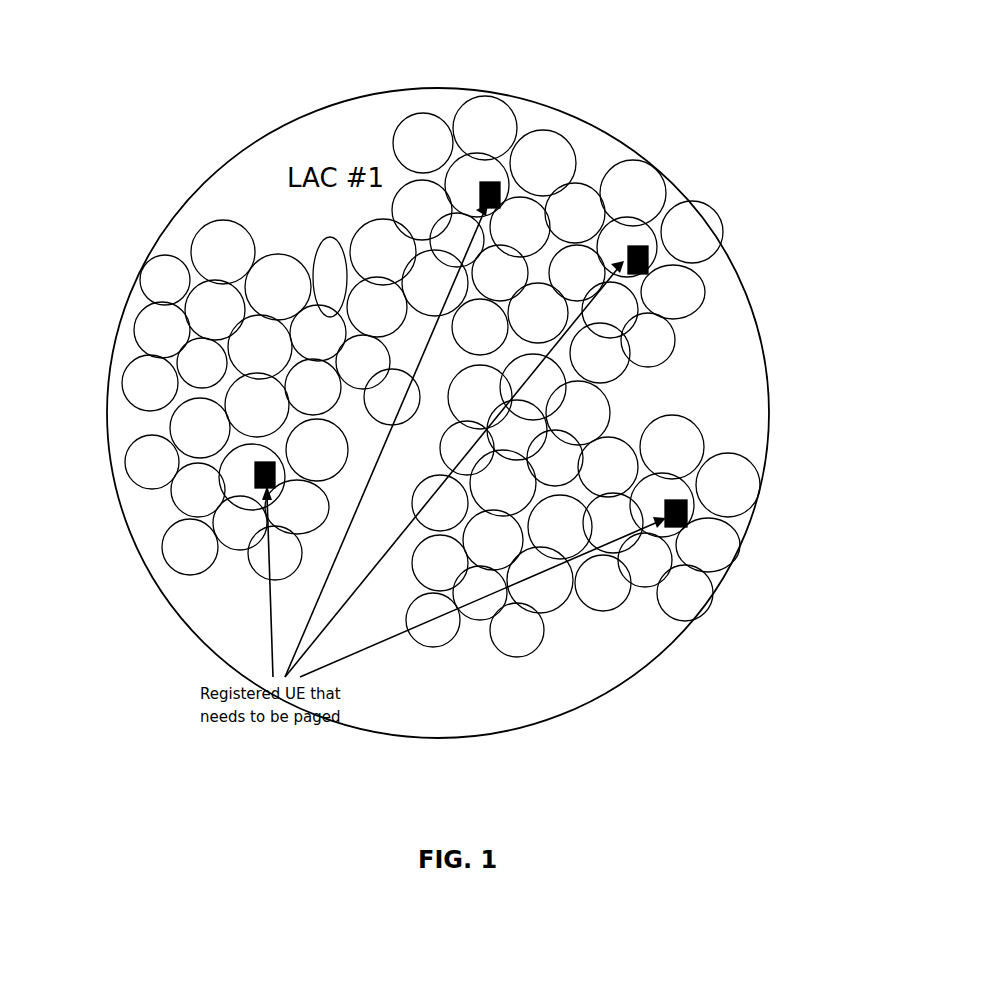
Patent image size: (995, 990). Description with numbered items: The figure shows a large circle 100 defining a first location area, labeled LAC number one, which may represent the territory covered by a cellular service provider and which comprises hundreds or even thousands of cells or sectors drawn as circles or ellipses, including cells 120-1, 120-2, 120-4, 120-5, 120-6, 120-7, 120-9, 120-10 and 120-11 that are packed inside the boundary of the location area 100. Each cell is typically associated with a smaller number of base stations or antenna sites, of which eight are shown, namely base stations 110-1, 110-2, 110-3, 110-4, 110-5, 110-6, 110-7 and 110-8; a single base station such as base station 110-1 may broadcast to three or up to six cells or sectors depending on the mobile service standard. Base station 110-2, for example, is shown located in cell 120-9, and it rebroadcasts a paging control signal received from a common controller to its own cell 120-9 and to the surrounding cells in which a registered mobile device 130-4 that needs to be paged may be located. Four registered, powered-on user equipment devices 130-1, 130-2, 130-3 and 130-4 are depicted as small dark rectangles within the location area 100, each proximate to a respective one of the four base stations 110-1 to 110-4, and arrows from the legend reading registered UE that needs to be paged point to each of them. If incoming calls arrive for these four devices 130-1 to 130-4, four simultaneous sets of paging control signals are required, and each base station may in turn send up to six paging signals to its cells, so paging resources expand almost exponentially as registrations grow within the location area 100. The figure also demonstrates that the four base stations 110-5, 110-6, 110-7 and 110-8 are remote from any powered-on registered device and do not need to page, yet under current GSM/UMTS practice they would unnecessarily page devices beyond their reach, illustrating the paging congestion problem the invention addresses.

The location area (LAC #1) 100 is at (280, 148).
The base station 110-1 is at (543, 137).
The base station 110-2 is at (720, 215).
The base station 110-3 is at (753, 478).
The base station 110-4 is at (345, 445).
The base station 110-5 is at (270, 265).
The base station 110-6 is at (430, 262).
The base station 110-7 is at (598, 377).
The base station 110-8 is at (575, 565).
The cell or sector 120-1 is at (148, 255).
The cell or sector 120-2 is at (210, 222).
The cell or sector 120-4 is at (172, 425).
The cell or sector 120-5 is at (205, 461).
The cell or sector 120-6 is at (735, 455).
The cell or sector 120-7 is at (437, 115).
The cell or sector 120-9 is at (718, 253).
The cell or sector 120-10 is at (627, 345).
The cell or sector 120-11 is at (535, 620).
The registered UE (mobile device) 130-1 is at (710, 523).
The registered UE (mobile device) 130-2 is at (253, 487).
The registered UE (mobile device) 130-3 is at (500, 180).
The registered UE (mobile device) 130-4 is at (667, 208).